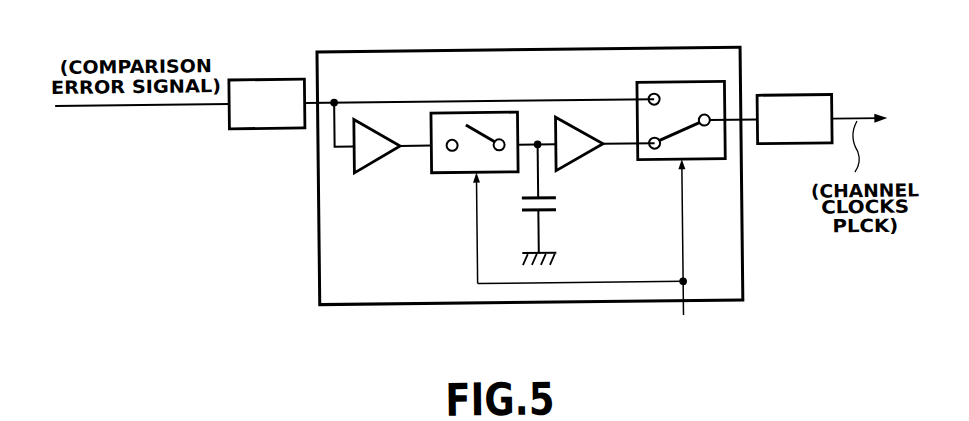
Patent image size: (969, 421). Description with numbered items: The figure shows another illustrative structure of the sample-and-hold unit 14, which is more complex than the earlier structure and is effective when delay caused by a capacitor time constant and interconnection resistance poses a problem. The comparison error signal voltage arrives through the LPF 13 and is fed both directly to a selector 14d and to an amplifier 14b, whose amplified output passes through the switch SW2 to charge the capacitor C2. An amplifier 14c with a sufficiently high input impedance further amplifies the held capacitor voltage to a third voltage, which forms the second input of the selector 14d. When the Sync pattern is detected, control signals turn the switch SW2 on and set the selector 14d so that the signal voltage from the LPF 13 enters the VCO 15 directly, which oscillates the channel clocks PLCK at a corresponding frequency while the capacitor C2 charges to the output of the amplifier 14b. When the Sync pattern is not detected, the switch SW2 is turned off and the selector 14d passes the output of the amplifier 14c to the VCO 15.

The LPF 13 is at (267, 77).
The sample-and-hold unit 14 is at (533, 50).
The amplifier 14b is at (372, 171).
The amplifier 14c is at (575, 171).
The selector 14d is at (707, 161).
The VCO 15 is at (796, 98).
The switch SW2 is at (469, 156).
The capacitor C2 is at (554, 204).